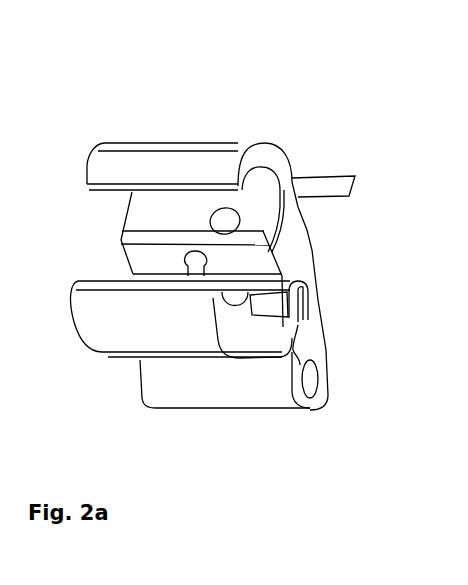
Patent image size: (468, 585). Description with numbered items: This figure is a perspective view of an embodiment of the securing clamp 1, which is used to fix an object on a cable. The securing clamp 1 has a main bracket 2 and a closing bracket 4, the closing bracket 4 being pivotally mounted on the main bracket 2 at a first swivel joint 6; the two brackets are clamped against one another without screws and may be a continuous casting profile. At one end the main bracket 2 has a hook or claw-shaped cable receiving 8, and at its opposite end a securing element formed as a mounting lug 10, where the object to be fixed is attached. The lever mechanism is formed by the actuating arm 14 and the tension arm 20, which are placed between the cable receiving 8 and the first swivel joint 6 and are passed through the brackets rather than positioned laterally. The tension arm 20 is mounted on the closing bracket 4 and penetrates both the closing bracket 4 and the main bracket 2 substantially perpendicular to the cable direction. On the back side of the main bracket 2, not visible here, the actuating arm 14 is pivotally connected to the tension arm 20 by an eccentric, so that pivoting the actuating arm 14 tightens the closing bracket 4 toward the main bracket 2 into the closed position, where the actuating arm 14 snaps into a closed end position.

The securing clamp 1 is at (244, 101).
The main bracket 2 is at (288, 258).
The closing bracket 4 is at (243, 333).
The first swivel joint 6 is at (295, 302).
The cable receiving 8 is at (258, 186).
The mounting lug 10 is at (312, 370).
The actuating arm 14 is at (327, 187).
The tension arm 20 is at (185, 362).